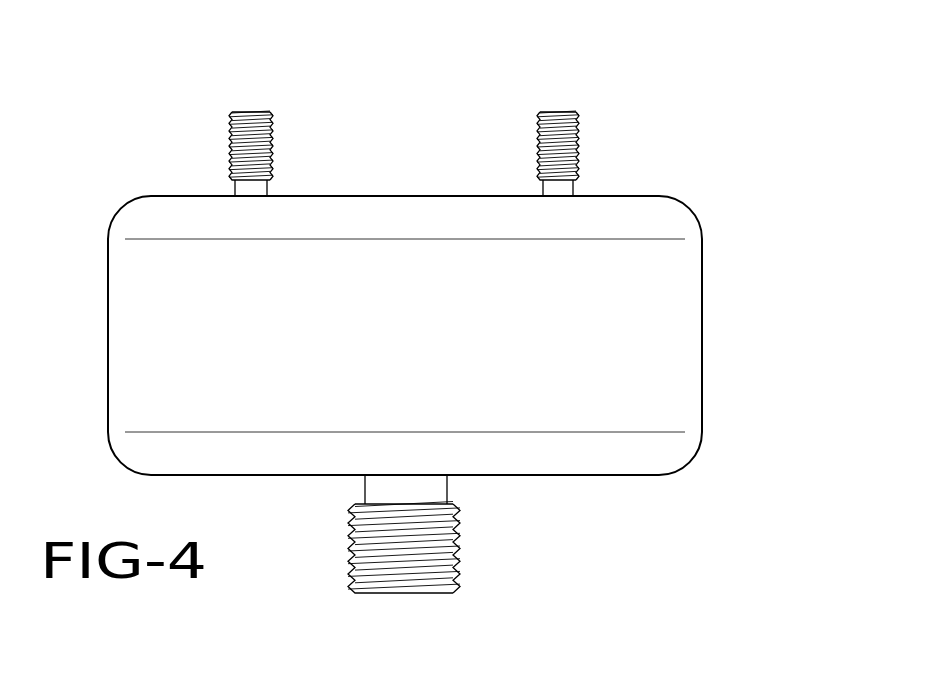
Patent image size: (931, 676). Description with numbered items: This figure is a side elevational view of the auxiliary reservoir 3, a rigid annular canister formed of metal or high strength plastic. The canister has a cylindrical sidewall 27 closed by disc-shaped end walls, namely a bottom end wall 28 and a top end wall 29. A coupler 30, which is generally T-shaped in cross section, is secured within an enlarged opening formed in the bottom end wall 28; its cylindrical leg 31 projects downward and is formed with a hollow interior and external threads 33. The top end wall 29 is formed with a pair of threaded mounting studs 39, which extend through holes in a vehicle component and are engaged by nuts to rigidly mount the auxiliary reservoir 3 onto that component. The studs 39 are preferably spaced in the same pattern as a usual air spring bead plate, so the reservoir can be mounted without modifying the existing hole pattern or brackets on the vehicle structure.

The auxiliary reservoir 3 is at (720, 257).
The cylindrical sidewall 27 is at (702, 340).
The bottom end wall 28 is at (565, 475).
The top end wall 29 is at (613, 196).
The coupler 30 is at (444, 574).
The cylindrical leg 31 is at (405, 488).
The external threads 33 is at (458, 578).
The mounting studs 39 is at (249, 112).